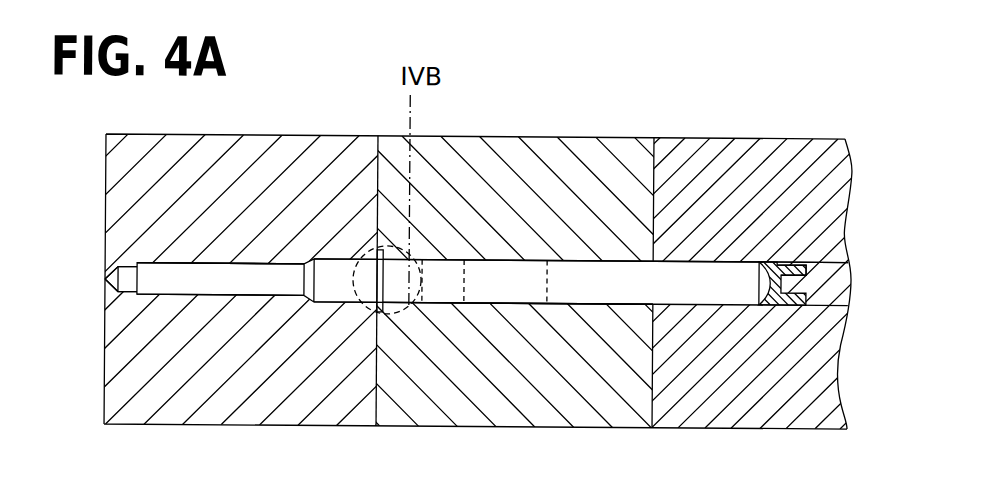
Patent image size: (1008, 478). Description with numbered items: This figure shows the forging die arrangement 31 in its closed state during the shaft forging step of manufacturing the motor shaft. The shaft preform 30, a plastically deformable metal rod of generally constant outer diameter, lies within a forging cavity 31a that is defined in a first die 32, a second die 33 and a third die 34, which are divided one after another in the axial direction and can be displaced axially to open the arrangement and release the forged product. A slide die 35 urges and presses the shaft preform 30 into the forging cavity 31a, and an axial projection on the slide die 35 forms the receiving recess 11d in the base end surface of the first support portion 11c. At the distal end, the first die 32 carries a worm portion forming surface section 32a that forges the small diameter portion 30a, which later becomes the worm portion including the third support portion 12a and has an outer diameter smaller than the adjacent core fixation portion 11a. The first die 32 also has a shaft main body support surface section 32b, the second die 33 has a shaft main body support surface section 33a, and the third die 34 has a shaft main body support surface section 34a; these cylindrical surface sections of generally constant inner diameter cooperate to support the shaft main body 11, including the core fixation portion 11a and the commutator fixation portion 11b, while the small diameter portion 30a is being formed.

The forging die arrangement 31 is at (852, 88).
The first die 32 is at (218, 134).
The worm portion forming surface section 32a is at (218, 262).
The shaft main body support surface section 32b is at (334, 258).
The second die 33 is at (470, 134).
The shaft main body support surface section 33a is at (570, 300).
The third die 34 is at (730, 134).
The shaft main body support surface section 34a is at (694, 258).
The slide die 35 is at (850, 257).
The shaft preform 30 is at (566, 250).
The small diameter portion 30a is at (208, 294).
The shaft main body 11 is at (482, 300).
The core fixation portion 11a is at (616, 258).
The commutator fixation portion 11b is at (456, 258).
The first support portion 11c is at (784, 300).
The receiving recess 11d is at (795, 260).
The third support portion 12a is at (129, 292).
The forging cavity 31a is at (605, 292).